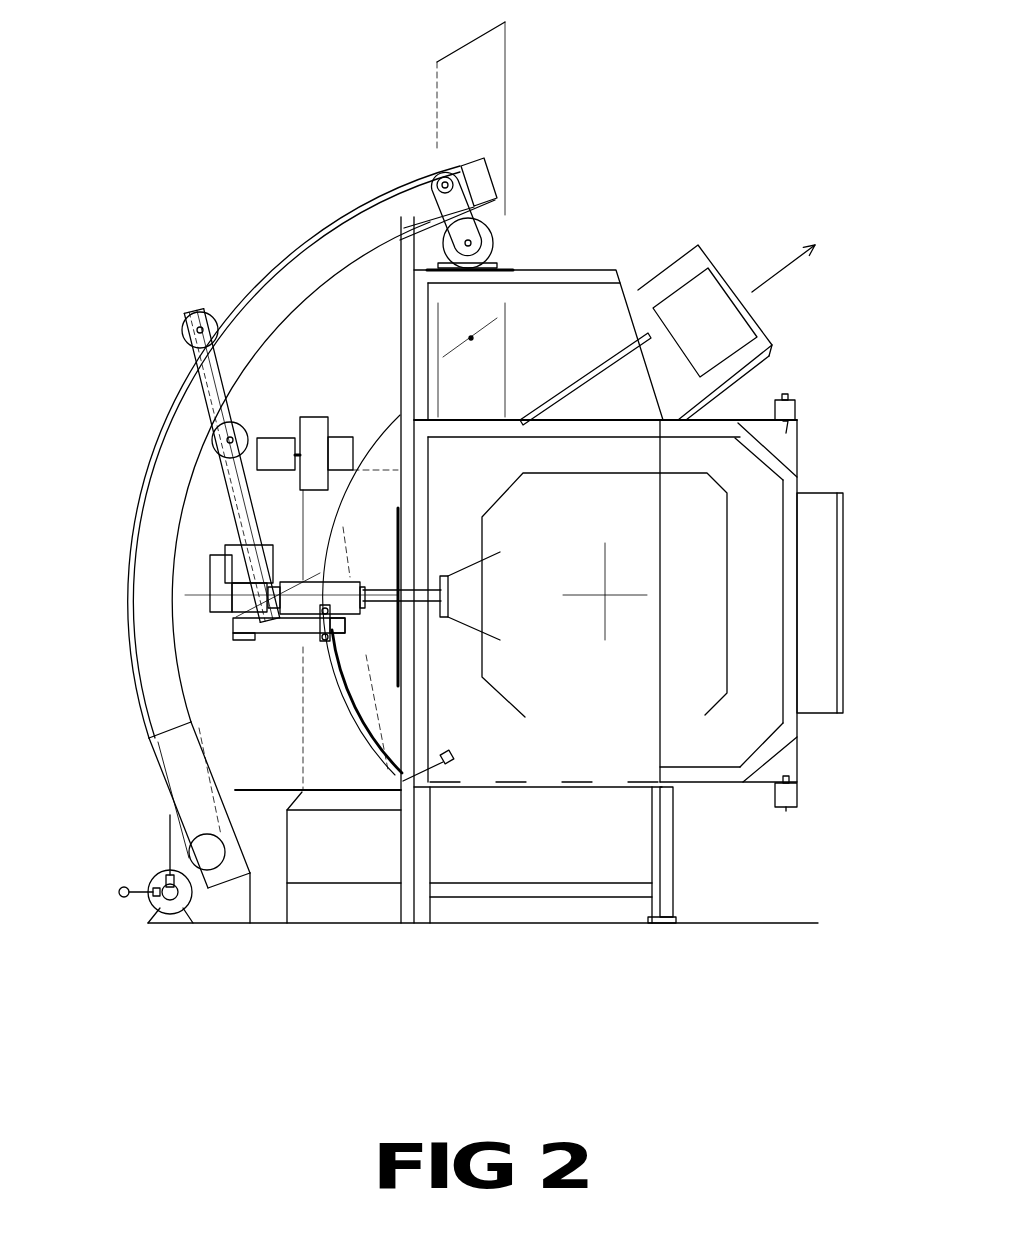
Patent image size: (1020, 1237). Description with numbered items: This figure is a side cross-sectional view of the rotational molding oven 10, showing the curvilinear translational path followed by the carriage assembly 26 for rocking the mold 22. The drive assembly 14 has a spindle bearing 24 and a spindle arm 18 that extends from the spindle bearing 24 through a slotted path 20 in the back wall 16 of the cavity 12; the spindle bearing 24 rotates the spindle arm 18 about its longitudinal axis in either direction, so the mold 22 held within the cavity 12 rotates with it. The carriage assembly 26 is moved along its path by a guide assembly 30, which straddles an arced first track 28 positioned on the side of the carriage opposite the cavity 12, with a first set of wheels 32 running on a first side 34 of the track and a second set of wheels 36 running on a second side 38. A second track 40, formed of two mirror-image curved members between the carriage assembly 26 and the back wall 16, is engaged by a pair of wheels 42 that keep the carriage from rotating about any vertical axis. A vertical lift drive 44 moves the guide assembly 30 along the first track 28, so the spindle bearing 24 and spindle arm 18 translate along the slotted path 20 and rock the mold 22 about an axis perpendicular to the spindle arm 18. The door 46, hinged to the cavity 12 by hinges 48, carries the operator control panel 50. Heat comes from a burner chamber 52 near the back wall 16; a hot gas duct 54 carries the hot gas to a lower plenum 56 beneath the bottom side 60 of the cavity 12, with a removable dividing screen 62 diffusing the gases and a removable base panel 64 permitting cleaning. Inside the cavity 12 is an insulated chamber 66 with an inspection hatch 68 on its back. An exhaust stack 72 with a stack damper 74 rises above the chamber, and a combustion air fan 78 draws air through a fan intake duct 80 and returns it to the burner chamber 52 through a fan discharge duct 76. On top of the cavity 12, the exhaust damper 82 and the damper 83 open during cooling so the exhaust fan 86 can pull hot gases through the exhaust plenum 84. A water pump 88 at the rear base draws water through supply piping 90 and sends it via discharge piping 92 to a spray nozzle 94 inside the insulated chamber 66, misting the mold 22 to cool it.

The rotational molding oven 10 is at (641, 160).
The cavity 12 is at (737, 745).
The drive assembly 14 is at (228, 565).
The back wall 16 is at (399, 463).
The spindle arm 18 is at (383, 607).
The slotted path 20 is at (416, 583).
The mold 22 is at (727, 613).
The spindle bearing 24 is at (292, 582).
The carriage assembly 26 is at (283, 637).
The first track 28 is at (260, 287).
The guide assembly 30 is at (208, 414).
The first set of wheels 32 is at (219, 433).
The first side 34 is at (215, 418).
The second set of wheels 36 is at (184, 336).
The second side 38 is at (227, 313).
The second track 40 is at (336, 517).
The pair of wheels 42 is at (322, 648).
The vertical lift drive 44 is at (440, 178).
The door 46 is at (784, 470).
The hinges 48 is at (798, 410).
The operator control panel 50 is at (828, 683).
The burner chamber 52 is at (272, 457).
The hot gas duct 54 is at (343, 868).
The lower plenum 56 is at (598, 862).
The bottom side 60 is at (574, 781).
The removable dividing screen 62 is at (539, 788).
The removable base panel 64 is at (533, 898).
The insulated chamber 66 is at (632, 703).
The inspection hatch 68 is at (400, 523).
The exhaust stack 72 is at (488, 133).
The stack damper 74 is at (492, 327).
The fan discharge duct 76 is at (317, 773).
The combustion air fan 78 is at (311, 417).
The fan intake duct 80 is at (349, 436).
The exhaust damper 82 is at (582, 384).
The damper 83 is at (674, 868).
The exhaust plenum 84 is at (768, 355).
The exhaust fan 86 is at (743, 321).
The water pump 88 is at (165, 890).
The supply piping 90 is at (120, 890).
The discharge piping 92 is at (166, 882).
The spray nozzle 94 is at (453, 754).